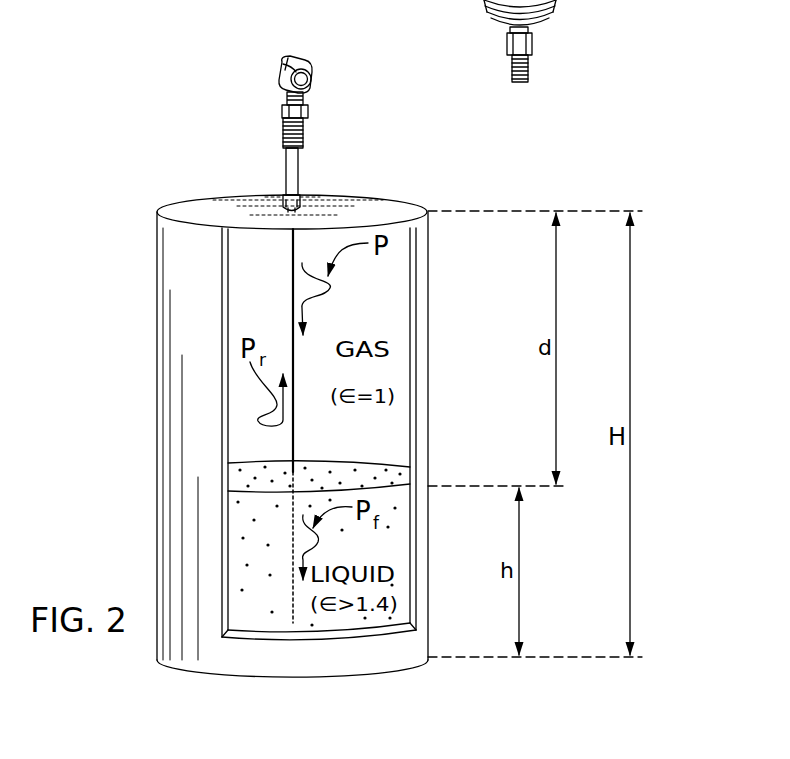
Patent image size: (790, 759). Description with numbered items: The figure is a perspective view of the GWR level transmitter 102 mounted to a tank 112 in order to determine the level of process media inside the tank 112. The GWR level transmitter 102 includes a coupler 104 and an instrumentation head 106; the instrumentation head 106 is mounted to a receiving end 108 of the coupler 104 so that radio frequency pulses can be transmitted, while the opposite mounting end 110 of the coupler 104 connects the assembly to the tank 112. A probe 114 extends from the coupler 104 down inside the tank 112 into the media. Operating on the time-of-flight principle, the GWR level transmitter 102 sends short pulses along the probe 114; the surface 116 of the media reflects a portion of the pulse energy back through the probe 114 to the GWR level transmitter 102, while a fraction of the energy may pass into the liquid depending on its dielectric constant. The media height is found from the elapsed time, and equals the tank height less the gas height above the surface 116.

The GWR level transmitter 102 is at (298, 109).
The coupler 104 is at (282, 169).
The instrumentation head 106 is at (317, 64).
The receiving end 108 is at (309, 131).
The mounting end 110 is at (306, 184).
The tank 112 is at (434, 252).
The probe 114 is at (291, 274).
The surface 116 is at (373, 472).